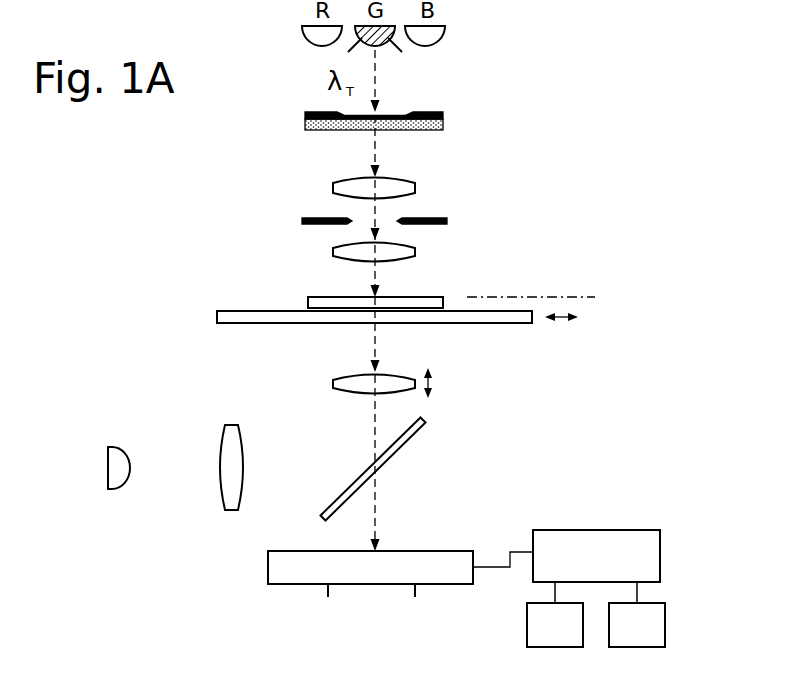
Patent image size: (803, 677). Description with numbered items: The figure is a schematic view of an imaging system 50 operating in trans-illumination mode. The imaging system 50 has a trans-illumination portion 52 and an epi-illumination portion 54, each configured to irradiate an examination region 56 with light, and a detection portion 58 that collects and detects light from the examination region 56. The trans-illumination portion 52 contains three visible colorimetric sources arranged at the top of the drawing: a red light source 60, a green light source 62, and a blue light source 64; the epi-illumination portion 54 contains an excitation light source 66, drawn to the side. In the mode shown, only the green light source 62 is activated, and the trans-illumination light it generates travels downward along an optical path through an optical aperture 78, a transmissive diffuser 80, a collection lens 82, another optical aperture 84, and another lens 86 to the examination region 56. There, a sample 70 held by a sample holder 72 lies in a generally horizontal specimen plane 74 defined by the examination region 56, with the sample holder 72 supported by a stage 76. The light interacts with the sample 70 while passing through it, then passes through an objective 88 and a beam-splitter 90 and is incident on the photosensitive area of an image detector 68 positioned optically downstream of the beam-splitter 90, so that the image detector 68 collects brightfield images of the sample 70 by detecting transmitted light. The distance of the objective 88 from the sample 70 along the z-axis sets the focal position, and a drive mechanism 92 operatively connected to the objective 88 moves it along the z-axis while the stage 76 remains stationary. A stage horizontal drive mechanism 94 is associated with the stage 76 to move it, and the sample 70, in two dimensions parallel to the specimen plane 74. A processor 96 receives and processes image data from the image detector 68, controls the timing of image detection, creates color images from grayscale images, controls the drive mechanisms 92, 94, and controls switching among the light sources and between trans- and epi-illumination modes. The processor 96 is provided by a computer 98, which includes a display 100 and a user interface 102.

The imaging system 50 is at (86, 232).
The trans-illumination portion 52 is at (256, 136).
The epi-illumination portion 54 is at (227, 384).
The examination region 56 is at (397, 290).
The detection portion 58 is at (466, 426).
The red light source 60 is at (303, 36).
The green light source 62 is at (381, 43).
The blue light source 64 is at (444, 36).
The excitation light source 66 is at (112, 447).
The image detector 68 is at (430, 551).
The sample 70 is at (371, 296).
The sample holder 72 is at (323, 297).
The specimen plane 74 is at (528, 297).
The stage 76 is at (243, 311).
The optical aperture 78 is at (436, 113).
The transmissive diffuser 80 is at (436, 130).
The collection lens 82 is at (396, 178).
The optical aperture 84 is at (432, 218).
The lens 86 is at (403, 245).
The objective 88 is at (395, 372).
The beam-splitter 90 is at (398, 444).
The drive mechanism 92 is at (433, 384).
The stage horizontal drive mechanism 94 is at (568, 320).
The processor 96 is at (598, 530).
The computer 98 is at (601, 488).
The display 100 is at (555, 625).
The user interface 102 is at (637, 625).